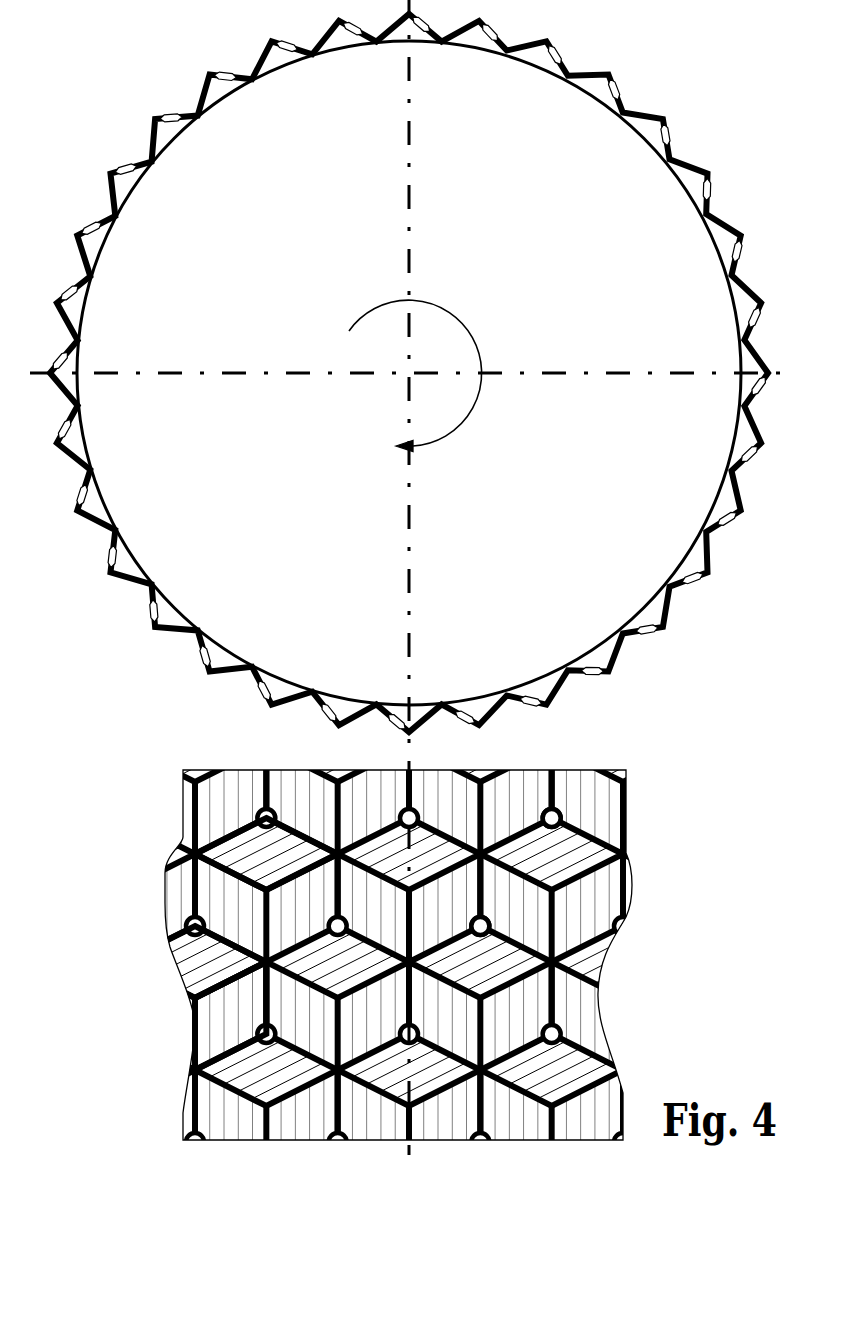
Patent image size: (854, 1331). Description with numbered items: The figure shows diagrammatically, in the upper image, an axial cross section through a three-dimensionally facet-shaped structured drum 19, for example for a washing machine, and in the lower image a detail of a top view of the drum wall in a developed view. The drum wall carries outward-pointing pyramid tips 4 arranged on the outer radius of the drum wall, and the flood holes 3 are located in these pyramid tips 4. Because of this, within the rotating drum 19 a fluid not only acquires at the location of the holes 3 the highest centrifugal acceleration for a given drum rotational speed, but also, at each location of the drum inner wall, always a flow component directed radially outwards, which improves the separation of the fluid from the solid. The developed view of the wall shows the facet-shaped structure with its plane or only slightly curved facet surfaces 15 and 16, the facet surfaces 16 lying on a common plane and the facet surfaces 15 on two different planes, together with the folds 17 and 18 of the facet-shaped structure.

The holes 3 is at (409, 516).
The pyramid tips 4 is at (186, 76).
The facet surfaces 15 is at (210, 797).
The facet surfaces 16 is at (224, 866).
The fold 17 is at (247, 1001).
The fold 18 is at (214, 959).
The drum 19 is at (616, 134).